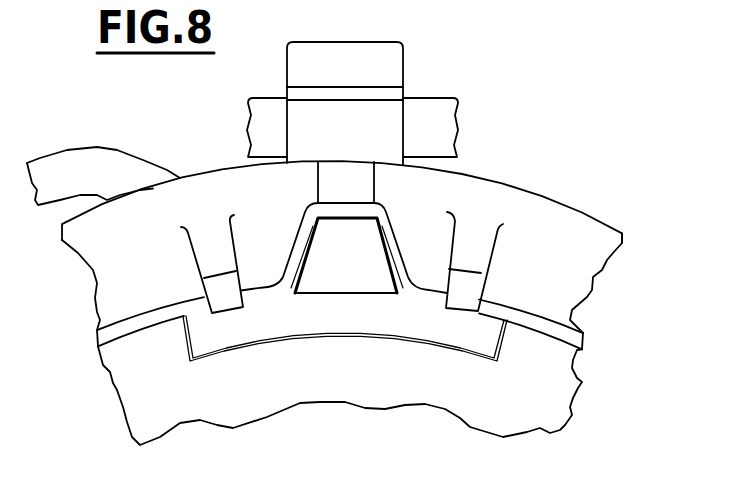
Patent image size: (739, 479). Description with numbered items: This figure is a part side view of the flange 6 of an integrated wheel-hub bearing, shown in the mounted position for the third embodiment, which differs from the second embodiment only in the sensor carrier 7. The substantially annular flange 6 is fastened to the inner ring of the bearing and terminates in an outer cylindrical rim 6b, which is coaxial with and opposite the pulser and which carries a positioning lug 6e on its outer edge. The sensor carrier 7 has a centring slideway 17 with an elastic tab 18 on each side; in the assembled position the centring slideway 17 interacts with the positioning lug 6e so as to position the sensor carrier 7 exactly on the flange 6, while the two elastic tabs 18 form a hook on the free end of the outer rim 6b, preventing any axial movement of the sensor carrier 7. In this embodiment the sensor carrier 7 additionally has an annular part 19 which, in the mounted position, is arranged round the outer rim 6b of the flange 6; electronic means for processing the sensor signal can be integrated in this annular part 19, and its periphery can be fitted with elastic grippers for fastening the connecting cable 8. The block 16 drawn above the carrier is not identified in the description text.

The flange 6 is at (593, 383).
The outer cylindrical rim 6b is at (544, 323).
The positioning lug 6e is at (298, 245).
The sensor carrier 7 is at (502, 173).
The connecting cable 8 is at (430, 117).
The top mounting block 16 is at (373, 68).
The centring slideway 17 is at (360, 250).
The elastic tabs 18 is at (462, 293).
The annular part 19 is at (560, 223).